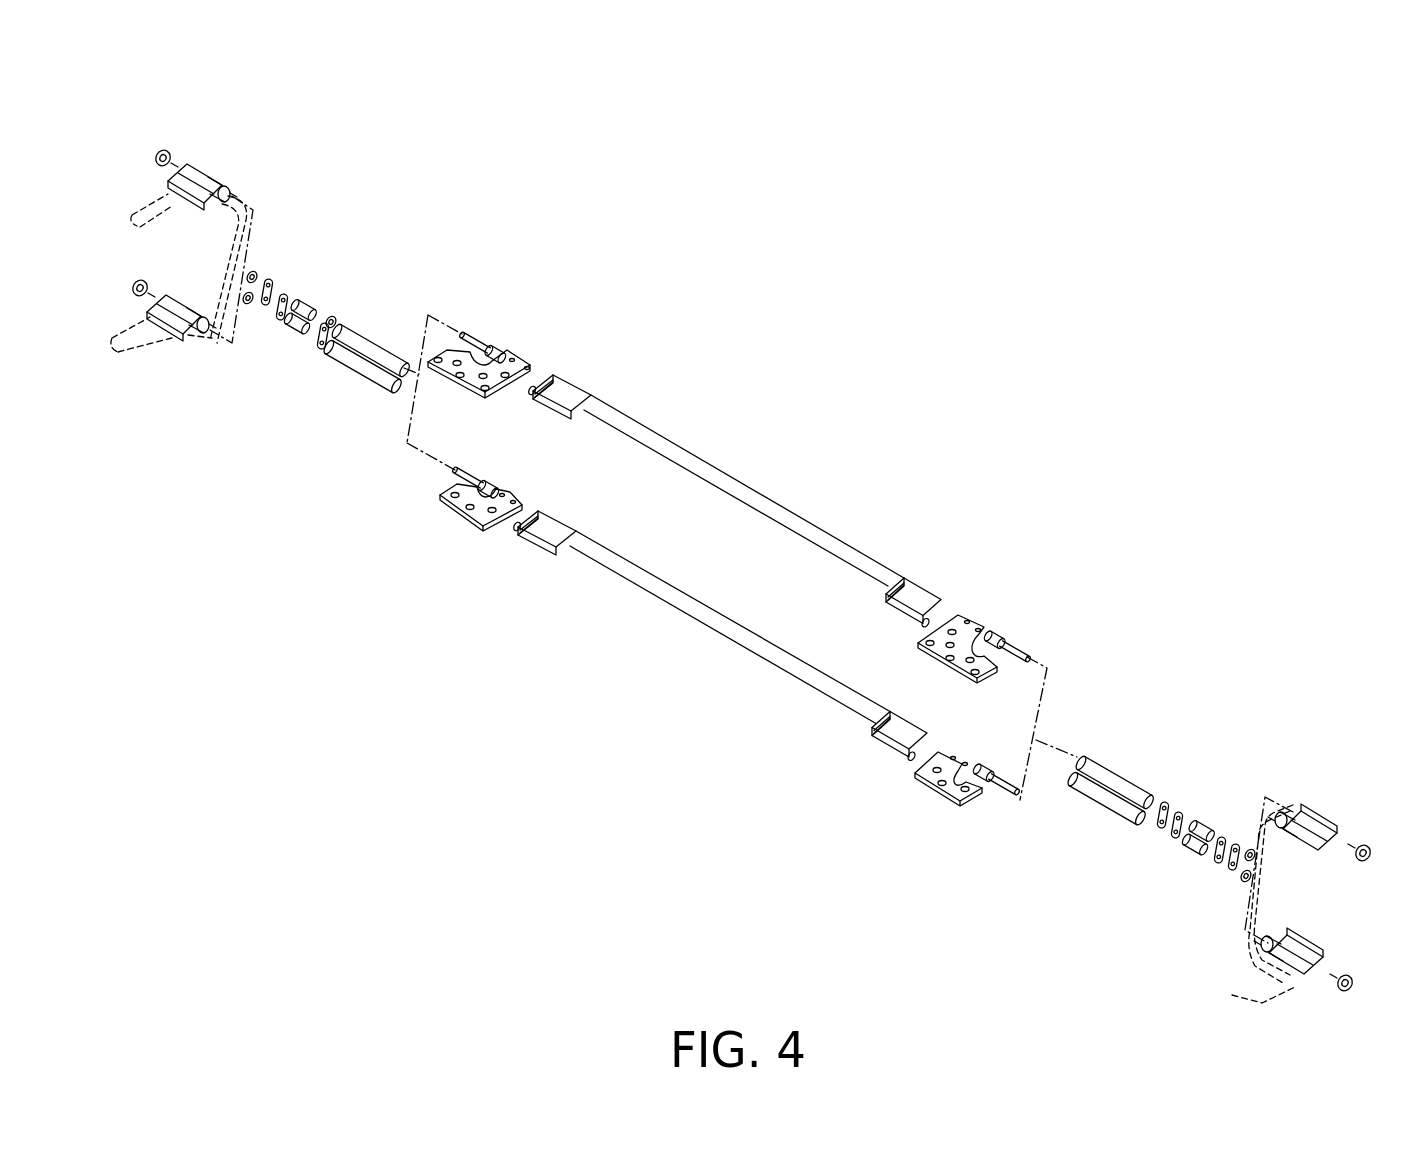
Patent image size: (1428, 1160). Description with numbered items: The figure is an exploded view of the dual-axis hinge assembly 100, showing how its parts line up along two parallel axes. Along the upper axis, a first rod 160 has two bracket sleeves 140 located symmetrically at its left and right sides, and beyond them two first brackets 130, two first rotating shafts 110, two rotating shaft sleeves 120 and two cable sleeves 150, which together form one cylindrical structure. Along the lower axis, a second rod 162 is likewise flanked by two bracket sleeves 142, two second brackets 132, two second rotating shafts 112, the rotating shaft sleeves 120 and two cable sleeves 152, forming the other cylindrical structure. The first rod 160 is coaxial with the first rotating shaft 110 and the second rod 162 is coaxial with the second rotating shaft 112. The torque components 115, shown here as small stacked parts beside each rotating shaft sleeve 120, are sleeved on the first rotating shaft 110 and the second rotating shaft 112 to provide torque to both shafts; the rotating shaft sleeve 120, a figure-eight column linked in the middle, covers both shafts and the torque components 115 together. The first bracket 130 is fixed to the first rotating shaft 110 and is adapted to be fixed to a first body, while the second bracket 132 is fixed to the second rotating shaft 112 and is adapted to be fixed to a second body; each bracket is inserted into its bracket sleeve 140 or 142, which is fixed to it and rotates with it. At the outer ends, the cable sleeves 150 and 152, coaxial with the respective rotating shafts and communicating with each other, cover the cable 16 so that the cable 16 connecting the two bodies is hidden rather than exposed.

The dual-axis hinge assembly 100 is at (1244, 323).
The cable 16 is at (158, 352).
The first rotating shaft 110 is at (480, 342).
The second rotating shaft 112 is at (470, 478).
The torque components 115 is at (342, 312).
The rotating shaft sleeve 120 is at (367, 343).
The first bracket 130 is at (513, 363).
The second bracket 132 is at (507, 493).
The bracket sleeve 140 is at (570, 388).
The bracket sleeve 142 is at (557, 525).
The cable sleeve 150 is at (205, 178).
The cable sleeve 152 is at (178, 307).
The first rod 160 is at (712, 474).
The second rod 162 is at (700, 612).